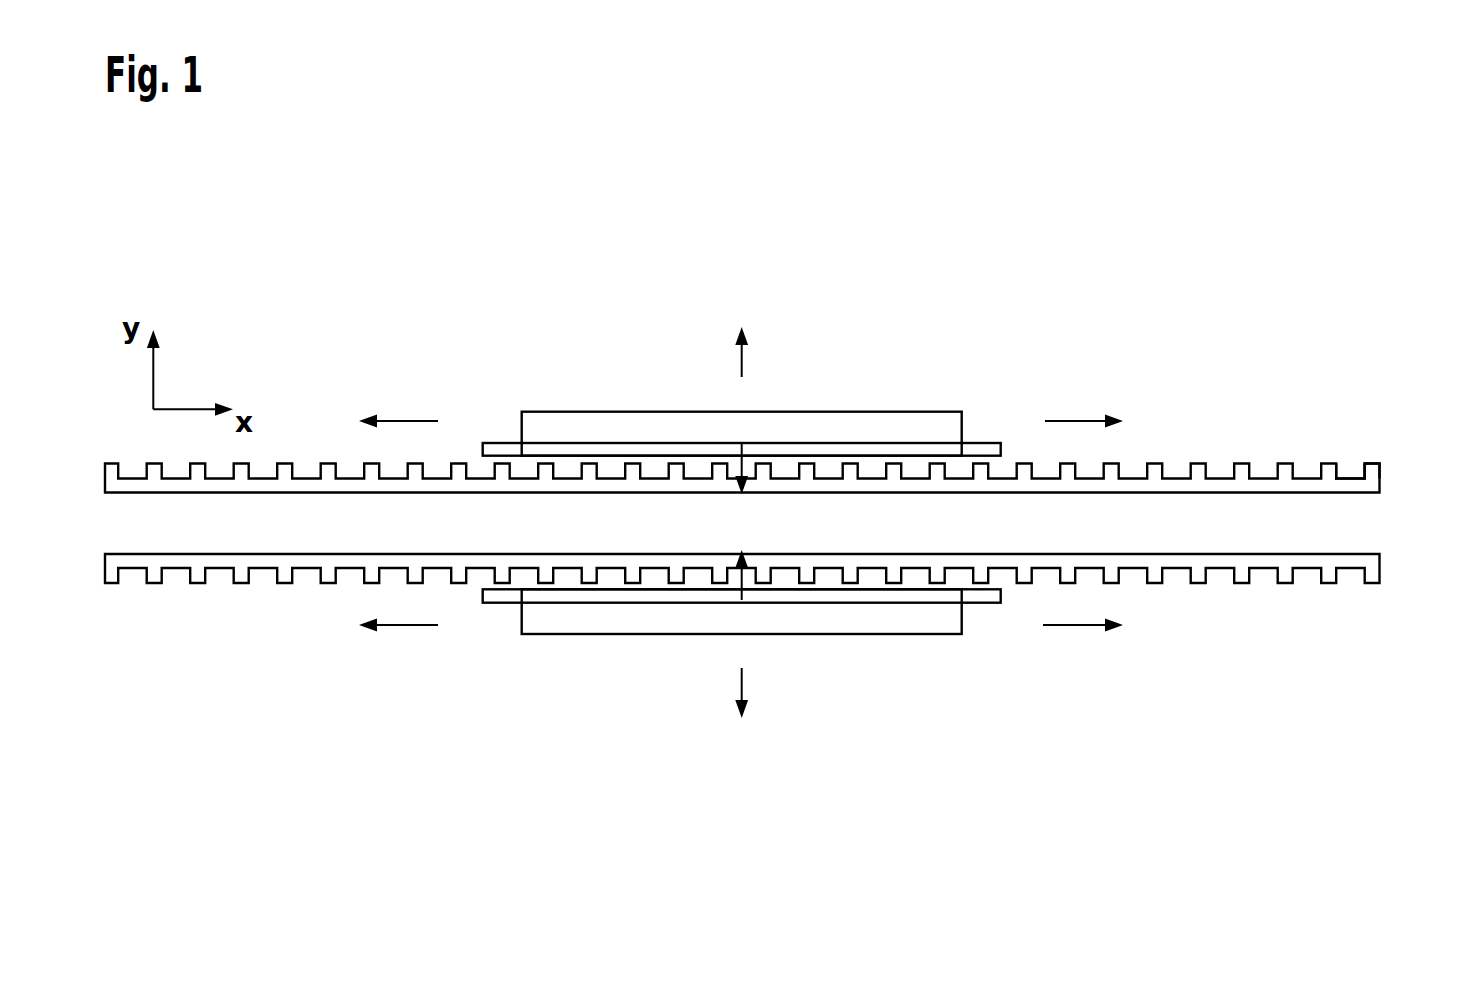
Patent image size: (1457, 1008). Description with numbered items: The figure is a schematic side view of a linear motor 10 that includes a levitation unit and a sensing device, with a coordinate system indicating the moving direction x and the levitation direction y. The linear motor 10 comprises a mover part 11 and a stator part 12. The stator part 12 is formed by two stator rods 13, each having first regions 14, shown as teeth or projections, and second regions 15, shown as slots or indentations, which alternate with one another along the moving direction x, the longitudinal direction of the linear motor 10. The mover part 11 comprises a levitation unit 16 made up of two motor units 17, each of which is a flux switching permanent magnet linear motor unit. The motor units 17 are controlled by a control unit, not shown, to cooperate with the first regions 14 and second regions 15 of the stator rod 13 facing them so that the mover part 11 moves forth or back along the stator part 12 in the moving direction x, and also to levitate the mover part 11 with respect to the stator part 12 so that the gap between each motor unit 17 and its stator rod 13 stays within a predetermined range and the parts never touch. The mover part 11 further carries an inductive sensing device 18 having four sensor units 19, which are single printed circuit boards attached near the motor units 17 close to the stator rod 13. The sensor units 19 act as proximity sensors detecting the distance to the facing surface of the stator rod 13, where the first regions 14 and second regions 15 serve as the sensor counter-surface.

The linear motor 10 is at (777, 496).
The mover part 11 is at (741, 370).
The stator part 12 is at (1388, 598).
The stator rod 13 is at (777, 525).
The first region 14 is at (1370, 464).
The second region 15 is at (1347, 468).
The levitation unit 16 is at (697, 384).
The motor unit 17 is at (905, 411).
The inductive sensing device 18 is at (1000, 637).
The sensor unit 19 is at (742, 401).